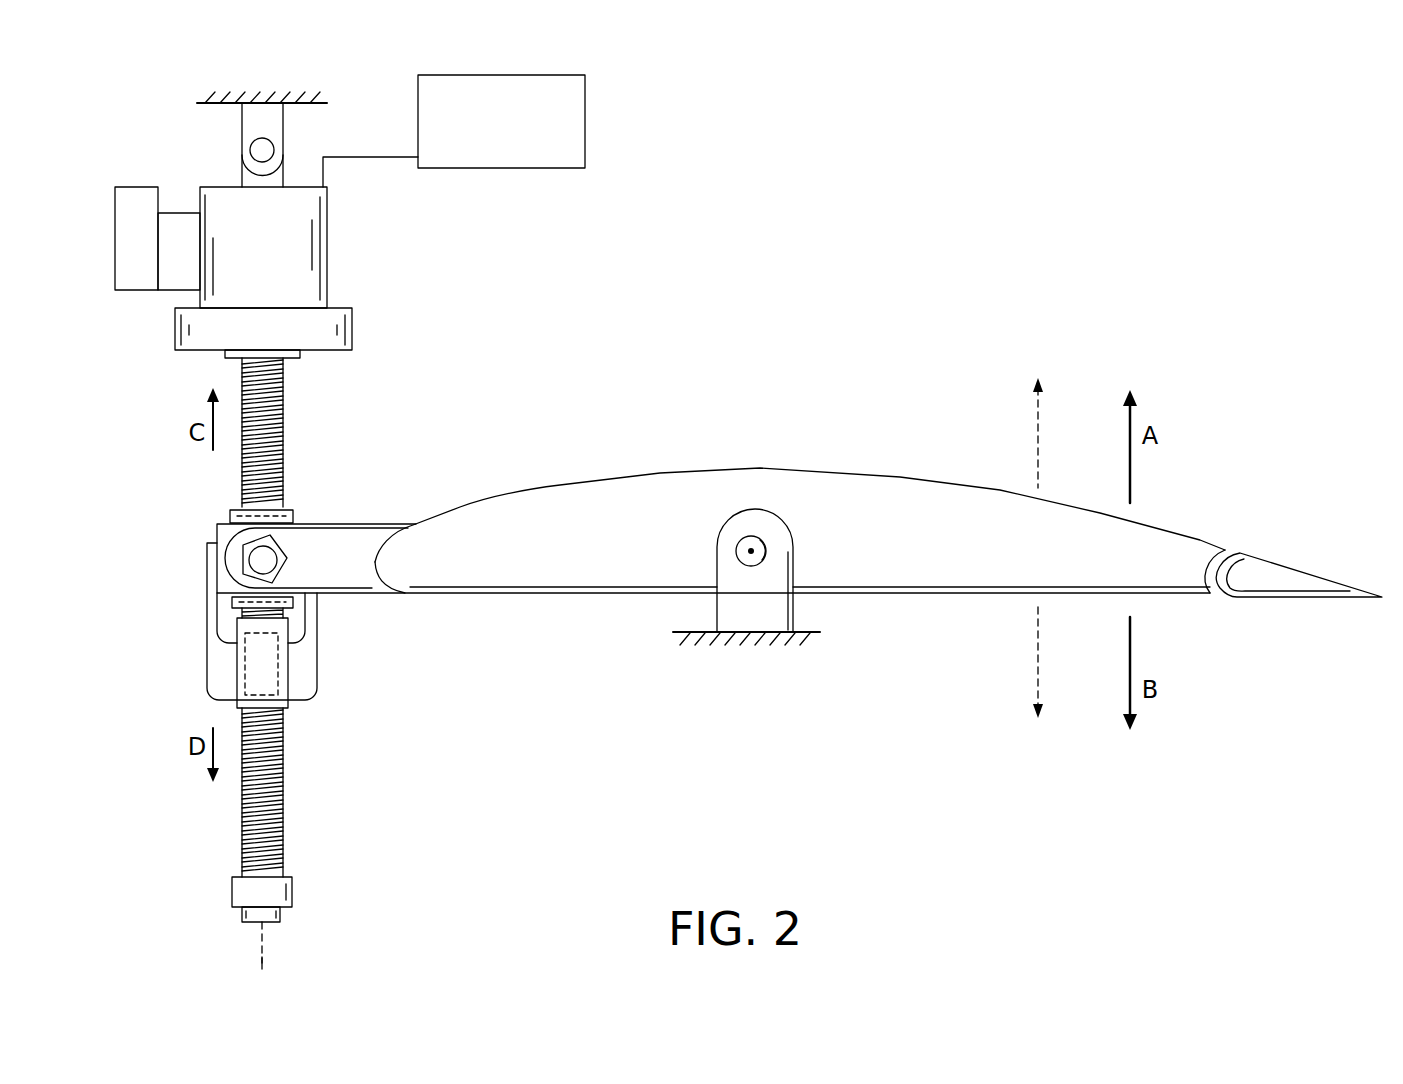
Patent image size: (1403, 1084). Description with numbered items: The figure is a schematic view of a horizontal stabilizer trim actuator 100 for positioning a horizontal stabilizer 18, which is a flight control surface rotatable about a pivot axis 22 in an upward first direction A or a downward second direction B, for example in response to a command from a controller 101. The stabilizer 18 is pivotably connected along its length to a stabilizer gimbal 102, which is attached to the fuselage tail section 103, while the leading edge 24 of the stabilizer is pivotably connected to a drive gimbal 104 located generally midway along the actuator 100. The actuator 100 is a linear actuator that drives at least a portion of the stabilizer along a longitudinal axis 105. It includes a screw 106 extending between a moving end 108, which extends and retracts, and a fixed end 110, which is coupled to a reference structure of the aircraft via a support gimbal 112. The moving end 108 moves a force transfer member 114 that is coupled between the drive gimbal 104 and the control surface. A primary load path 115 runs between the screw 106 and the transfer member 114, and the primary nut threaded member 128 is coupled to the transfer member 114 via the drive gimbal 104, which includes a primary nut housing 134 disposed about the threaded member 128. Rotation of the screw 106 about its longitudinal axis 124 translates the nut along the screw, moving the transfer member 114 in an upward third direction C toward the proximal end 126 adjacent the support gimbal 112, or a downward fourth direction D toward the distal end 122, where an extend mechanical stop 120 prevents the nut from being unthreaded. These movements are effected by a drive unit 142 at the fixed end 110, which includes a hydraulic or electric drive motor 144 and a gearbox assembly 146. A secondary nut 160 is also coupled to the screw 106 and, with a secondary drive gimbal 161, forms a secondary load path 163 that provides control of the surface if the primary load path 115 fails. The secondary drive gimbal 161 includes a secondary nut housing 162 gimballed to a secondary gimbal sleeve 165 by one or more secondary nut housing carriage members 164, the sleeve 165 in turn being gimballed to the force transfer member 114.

The horizontal stabilizer 18 is at (758, 467).
The pivot axis 22 is at (748, 551).
The leading edge 24 is at (440, 532).
The horizontal stabilizer trim actuator 100 is at (145, 482).
The controller 101 is at (480, 136).
The stabilizer gimbal 102 is at (766, 536).
The fuselage tail section 103 is at (270, 101).
The drive gimbal 104 is at (222, 575).
The longitudinal axis 105 is at (1038, 437).
The screw 106 is at (241, 787).
The moving end 108 is at (316, 772).
The fixed end 110 is at (358, 252).
The support gimbal 112 is at (290, 130).
The force transfer member 114 is at (365, 535).
The primary load path 115 is at (228, 519).
The extend mechanical stop 120 is at (232, 892).
The distal end 122 is at (316, 857).
The longitudinal axis 124 is at (263, 963).
The proximal end 126 is at (316, 389).
The primary nut threaded member 128 is at (293, 512).
The primary nut housing 134 is at (222, 514).
The drive unit 142 is at (99, 165).
The drive motor 144 is at (133, 263).
The gearbox assembly 146 is at (180, 228).
The secondary nut 160 is at (280, 675).
The secondary drive gimbal 161 is at (222, 553).
The secondary nut housing 162 is at (226, 708).
The secondary load path 163 is at (192, 650).
The secondary nut housing carriage member 164 is at (318, 618).
The secondary gimbal sleeve 165 is at (303, 523).